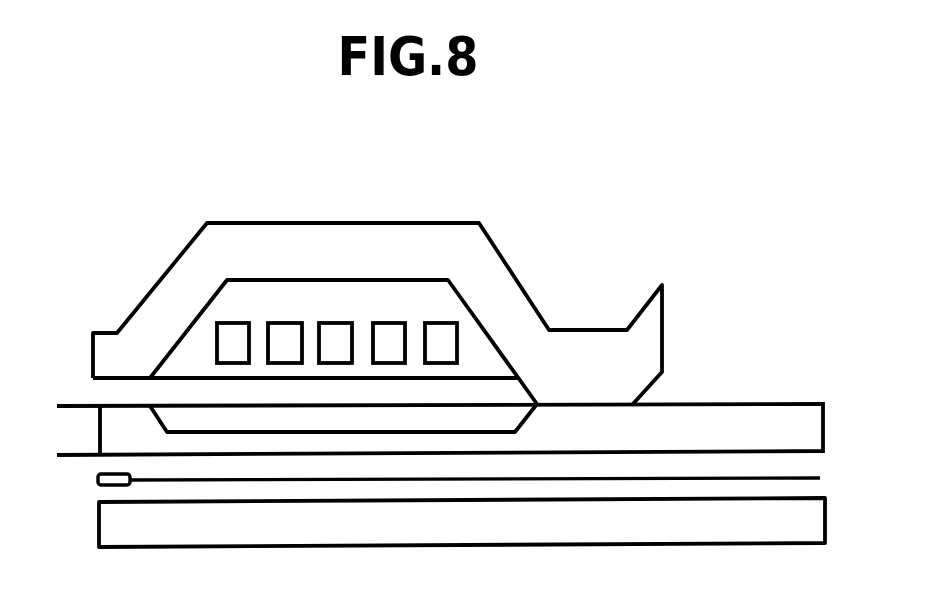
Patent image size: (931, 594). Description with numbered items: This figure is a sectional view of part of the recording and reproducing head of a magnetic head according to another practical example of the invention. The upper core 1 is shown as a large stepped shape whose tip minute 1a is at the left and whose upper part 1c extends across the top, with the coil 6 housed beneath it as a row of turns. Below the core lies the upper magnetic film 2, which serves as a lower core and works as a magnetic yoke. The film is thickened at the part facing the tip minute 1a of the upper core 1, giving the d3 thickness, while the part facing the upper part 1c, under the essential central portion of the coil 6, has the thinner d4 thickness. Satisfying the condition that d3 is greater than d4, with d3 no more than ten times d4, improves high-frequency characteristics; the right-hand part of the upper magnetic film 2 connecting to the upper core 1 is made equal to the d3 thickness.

The upper core 1 is at (492, 280).
The tip minute of upper core 1a is at (110, 342).
The upper part of upper core 1c is at (348, 240).
The coil 6 is at (240, 323).
The upper magnetic film 2 is at (106, 410).
The d3 thickness d3 is at (73, 412).
The d4 thickness d4 is at (150, 468).